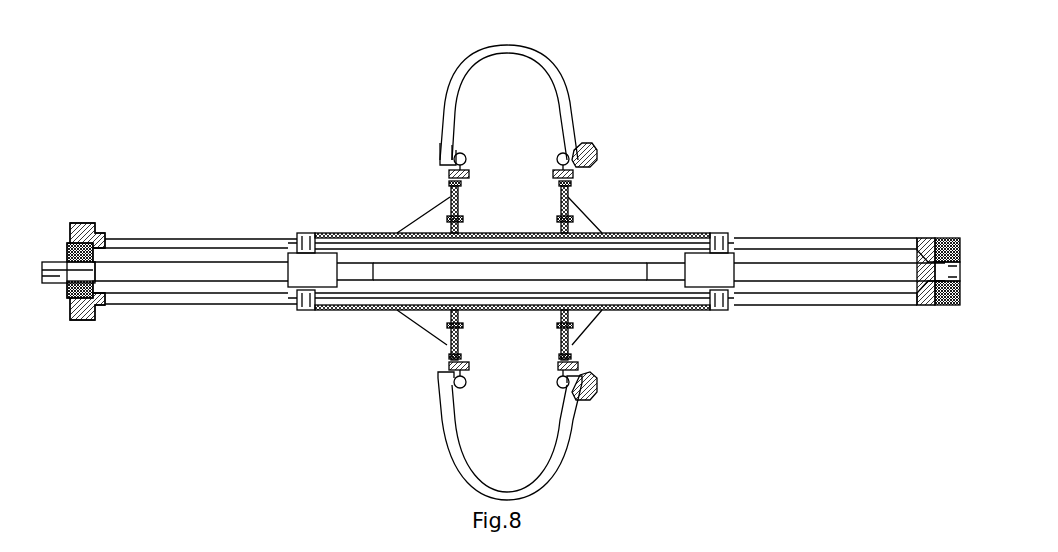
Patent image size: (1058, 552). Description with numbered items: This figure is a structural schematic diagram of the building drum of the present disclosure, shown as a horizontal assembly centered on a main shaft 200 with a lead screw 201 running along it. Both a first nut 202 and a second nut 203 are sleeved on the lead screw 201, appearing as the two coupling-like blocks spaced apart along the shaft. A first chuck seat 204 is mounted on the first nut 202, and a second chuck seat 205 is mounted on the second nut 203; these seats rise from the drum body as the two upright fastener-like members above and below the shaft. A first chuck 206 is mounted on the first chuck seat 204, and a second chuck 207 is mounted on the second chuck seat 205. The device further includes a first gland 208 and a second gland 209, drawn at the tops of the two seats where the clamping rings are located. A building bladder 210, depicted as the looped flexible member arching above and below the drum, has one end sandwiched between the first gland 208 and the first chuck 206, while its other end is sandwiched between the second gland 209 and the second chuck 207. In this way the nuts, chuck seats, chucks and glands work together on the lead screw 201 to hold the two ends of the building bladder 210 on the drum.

The main shaft 200 is at (102, 237).
The lead screw 201 is at (175, 272).
The first nut 202 is at (298, 270).
The second nut 203 is at (698, 268).
The first chuck seat 204 is at (428, 225).
The second chuck seat 205 is at (582, 223).
The first chuck 206 is at (442, 143).
The second chuck 207 is at (580, 145).
The first gland 208 is at (463, 163).
The second gland 209 is at (565, 153).
The building bladder 210 is at (444, 135).